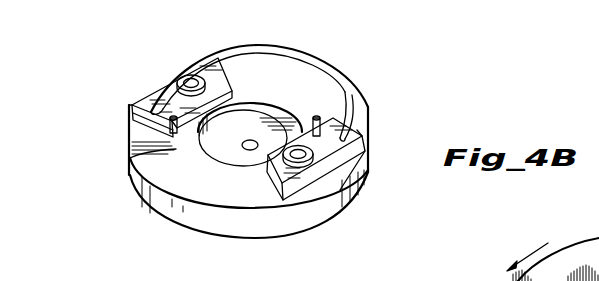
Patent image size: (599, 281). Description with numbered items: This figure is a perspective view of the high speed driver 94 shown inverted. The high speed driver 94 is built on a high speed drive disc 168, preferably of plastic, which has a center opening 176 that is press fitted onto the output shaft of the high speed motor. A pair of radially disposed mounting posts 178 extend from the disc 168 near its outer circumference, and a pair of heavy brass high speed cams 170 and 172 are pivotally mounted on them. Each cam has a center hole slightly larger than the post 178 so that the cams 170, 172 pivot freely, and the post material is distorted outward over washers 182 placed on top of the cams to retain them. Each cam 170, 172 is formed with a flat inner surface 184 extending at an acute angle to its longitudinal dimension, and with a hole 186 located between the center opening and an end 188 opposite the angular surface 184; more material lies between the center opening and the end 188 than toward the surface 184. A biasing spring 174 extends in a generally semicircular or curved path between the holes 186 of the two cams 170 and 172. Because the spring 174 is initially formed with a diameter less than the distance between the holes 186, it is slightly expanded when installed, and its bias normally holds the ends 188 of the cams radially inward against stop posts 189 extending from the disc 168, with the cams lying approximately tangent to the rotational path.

The high speed driver 94 is at (396, 103).
The high speed drive disc 168 is at (163, 195).
The high speed cam 170 is at (368, 168).
The high speed cam 172 is at (130, 105).
The biasing spring 174 is at (337, 85).
The center opening 176 is at (245, 142).
The mounting post 178 is at (192, 76).
The washer 182 is at (215, 63).
The flat inner surface 184 is at (222, 68).
The hole 186 is at (151, 104).
The end 188 is at (133, 122).
The stop post 189 is at (316, 116).